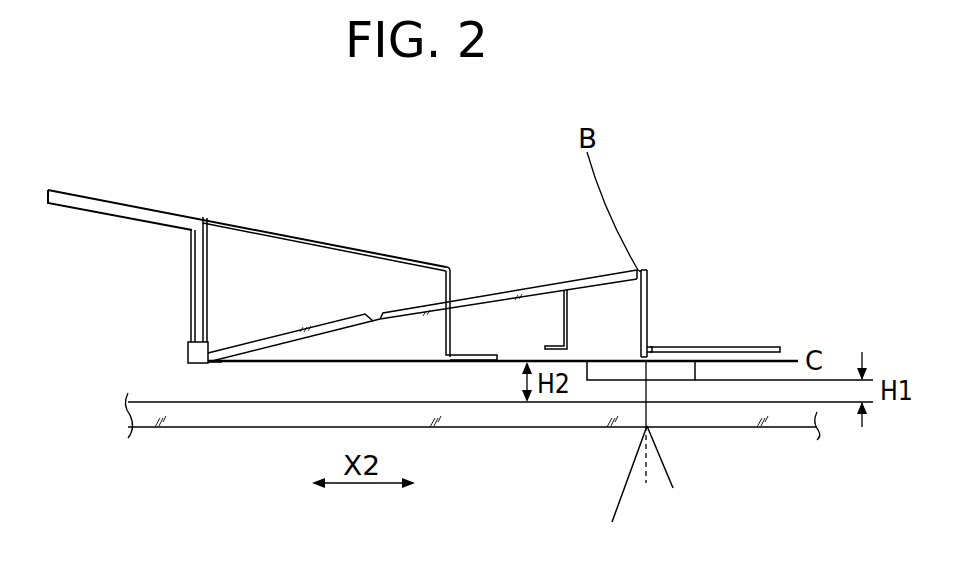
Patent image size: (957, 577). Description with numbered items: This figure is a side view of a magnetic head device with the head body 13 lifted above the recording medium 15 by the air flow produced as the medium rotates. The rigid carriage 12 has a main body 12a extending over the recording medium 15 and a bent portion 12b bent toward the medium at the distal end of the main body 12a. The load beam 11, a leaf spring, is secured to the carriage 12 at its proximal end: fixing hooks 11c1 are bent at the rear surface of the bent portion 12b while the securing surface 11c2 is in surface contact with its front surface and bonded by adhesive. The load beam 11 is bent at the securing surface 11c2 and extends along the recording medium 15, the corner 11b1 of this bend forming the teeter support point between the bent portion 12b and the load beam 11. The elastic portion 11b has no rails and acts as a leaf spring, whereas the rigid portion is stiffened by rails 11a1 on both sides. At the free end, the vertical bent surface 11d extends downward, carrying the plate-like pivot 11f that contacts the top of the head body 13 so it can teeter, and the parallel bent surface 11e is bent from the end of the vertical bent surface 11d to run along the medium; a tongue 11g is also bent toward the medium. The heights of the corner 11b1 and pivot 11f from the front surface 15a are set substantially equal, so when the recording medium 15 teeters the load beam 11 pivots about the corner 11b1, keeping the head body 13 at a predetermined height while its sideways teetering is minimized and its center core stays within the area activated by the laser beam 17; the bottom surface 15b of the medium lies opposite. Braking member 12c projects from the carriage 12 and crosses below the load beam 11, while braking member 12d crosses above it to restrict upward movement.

The load beam 11 is at (490, 283).
The rail 11a1 is at (558, 281).
The elastic portion 11b is at (294, 326).
The corner 11b1 is at (220, 364).
The fixing hook 11c1 is at (188, 352).
The securing surface 11c2 is at (224, 277).
The vertical bent surface 11d is at (648, 292).
The parallel bent surface 11e is at (760, 347).
The pivot 11f is at (653, 352).
The tongue 11g is at (568, 310).
The carriage 12 is at (143, 198).
The main body 12a is at (70, 200).
The bent portion 12b is at (191, 241).
The braking member 12c is at (505, 338).
The braking member 12d is at (445, 283).
The head body 13 is at (603, 377).
The recording medium 15 is at (805, 416).
The front surface 15a is at (366, 384).
The bottom surface of base panel 15b is at (741, 440).
The laser beam 17 is at (657, 468).